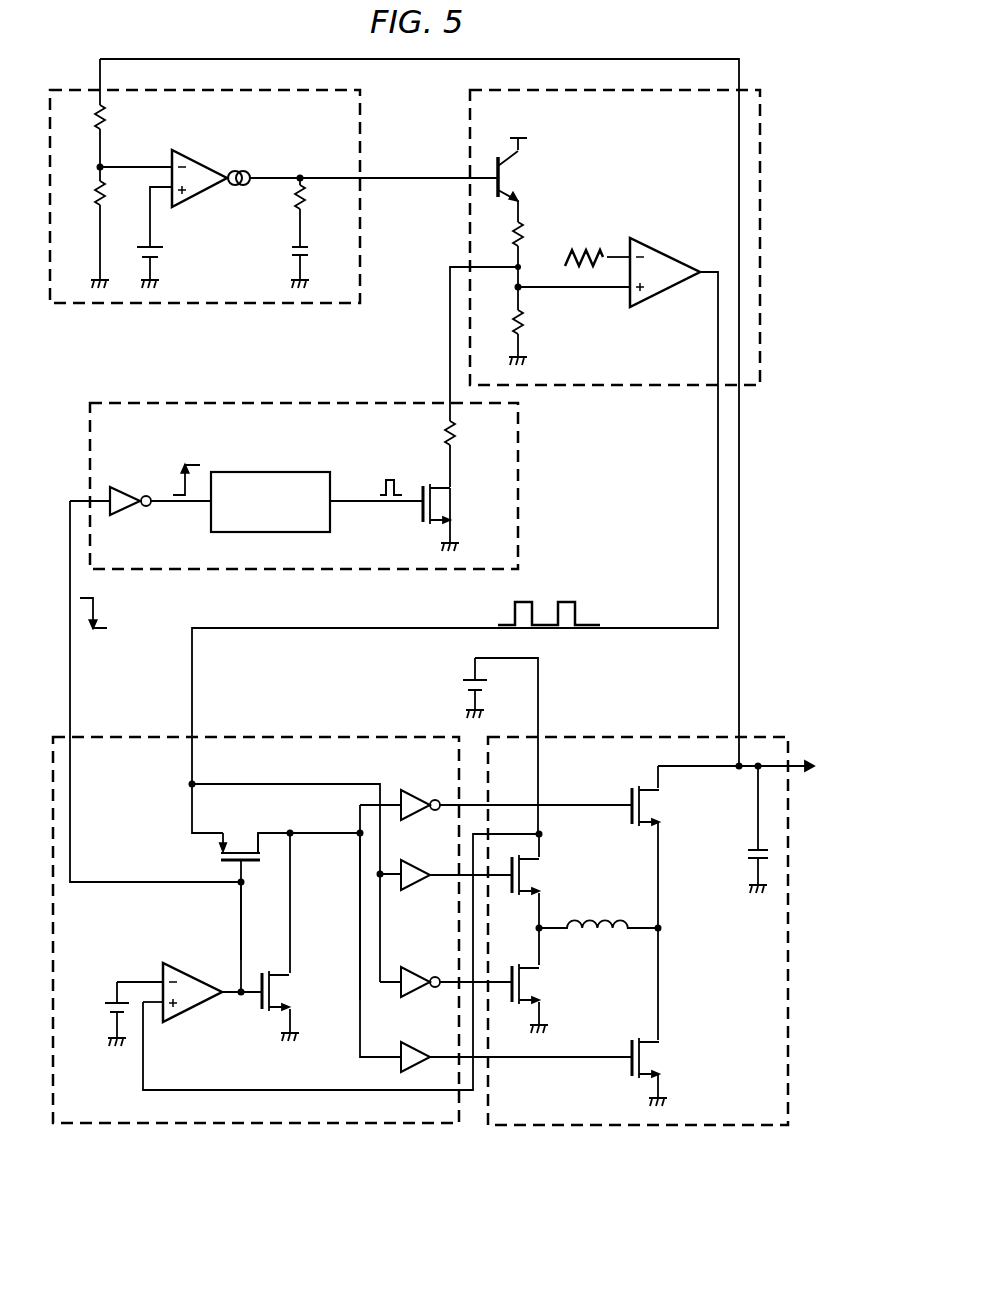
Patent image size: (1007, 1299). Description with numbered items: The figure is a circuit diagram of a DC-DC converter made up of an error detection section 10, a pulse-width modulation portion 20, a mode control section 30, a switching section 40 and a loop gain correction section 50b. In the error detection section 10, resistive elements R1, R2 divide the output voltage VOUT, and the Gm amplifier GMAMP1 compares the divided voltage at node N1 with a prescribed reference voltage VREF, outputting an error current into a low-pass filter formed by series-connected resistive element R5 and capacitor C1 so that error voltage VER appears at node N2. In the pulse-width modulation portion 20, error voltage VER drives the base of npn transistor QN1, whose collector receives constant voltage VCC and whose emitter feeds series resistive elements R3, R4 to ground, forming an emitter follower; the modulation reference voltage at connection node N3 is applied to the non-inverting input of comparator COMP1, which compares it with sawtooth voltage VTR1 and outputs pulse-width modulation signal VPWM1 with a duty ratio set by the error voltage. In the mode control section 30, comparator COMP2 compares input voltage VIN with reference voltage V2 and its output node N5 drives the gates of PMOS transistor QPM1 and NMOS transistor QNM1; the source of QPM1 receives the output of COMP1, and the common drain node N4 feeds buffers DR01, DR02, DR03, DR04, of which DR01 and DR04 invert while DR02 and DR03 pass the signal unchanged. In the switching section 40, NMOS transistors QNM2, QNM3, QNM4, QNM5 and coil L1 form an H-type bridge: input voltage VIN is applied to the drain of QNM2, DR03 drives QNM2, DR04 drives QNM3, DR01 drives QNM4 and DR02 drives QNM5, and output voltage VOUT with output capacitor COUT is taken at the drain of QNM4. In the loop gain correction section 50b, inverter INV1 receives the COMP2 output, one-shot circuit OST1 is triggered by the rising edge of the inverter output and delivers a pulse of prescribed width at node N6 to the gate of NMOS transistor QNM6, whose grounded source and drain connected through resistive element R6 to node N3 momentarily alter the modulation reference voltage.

The error detection section 10 is at (112, 304).
The pulse-width modulation portion 20 is at (608, 386).
The mode control section 30 is at (212, 1125).
The switching section 40 is at (715, 1128).
The loop gain correction section 50b is at (249, 401).
The resistive element R1 is at (83, 123).
The resistive element R2 is at (83, 199).
The resistive element R3 is at (505, 244).
The resistive element R4 is at (507, 337).
The resistive element R5 is at (314, 216).
The resistive element R6 is at (436, 437).
The capacitor C1 is at (314, 264).
The node N1 is at (106, 172).
The node N2 is at (296, 183).
The connection node N3 is at (523, 292).
The node N4 is at (346, 916).
The node N5 is at (226, 921).
The node N6 is at (376, 490).
The Gm amplifier GMAMP1 is at (206, 164).
The reference voltage VREF is at (175, 237).
The error voltage VER is at (385, 163).
The constant voltage VCC is at (520, 128).
The npn transistor QN1 is at (530, 186).
The sawtooth voltage VTR1 is at (593, 242).
The comparator COMP1 is at (609, 284).
The inverter INV1 is at (140, 489).
The one-shot circuit OST1 is at (271, 470).
The NMOS transistor QNM6 is at (464, 517).
The pulse-width modulation signal VPWM1 is at (588, 608).
The input voltage VIN is at (457, 687).
The PMOS transistor QPM1 is at (239, 832).
The comparator COMP2 is at (187, 980).
The reference voltage V2 is at (119, 1014).
The NMOS transistor QNM1 is at (304, 1006).
The buffer DR01 is at (424, 791).
The buffer DR02 is at (424, 1045).
The buffer DR03 is at (424, 861).
The buffer DR04 is at (424, 969).
The NMOS transistor QNM2 is at (557, 875).
The NMOS transistor QNM3 is at (557, 998).
The NMOS transistor QNM4 is at (675, 806).
The NMOS transistor QNM5 is at (675, 1072).
The coil L1 is at (598, 937).
The output capacitor COUT is at (732, 829).
The output voltage VOUT is at (802, 771).